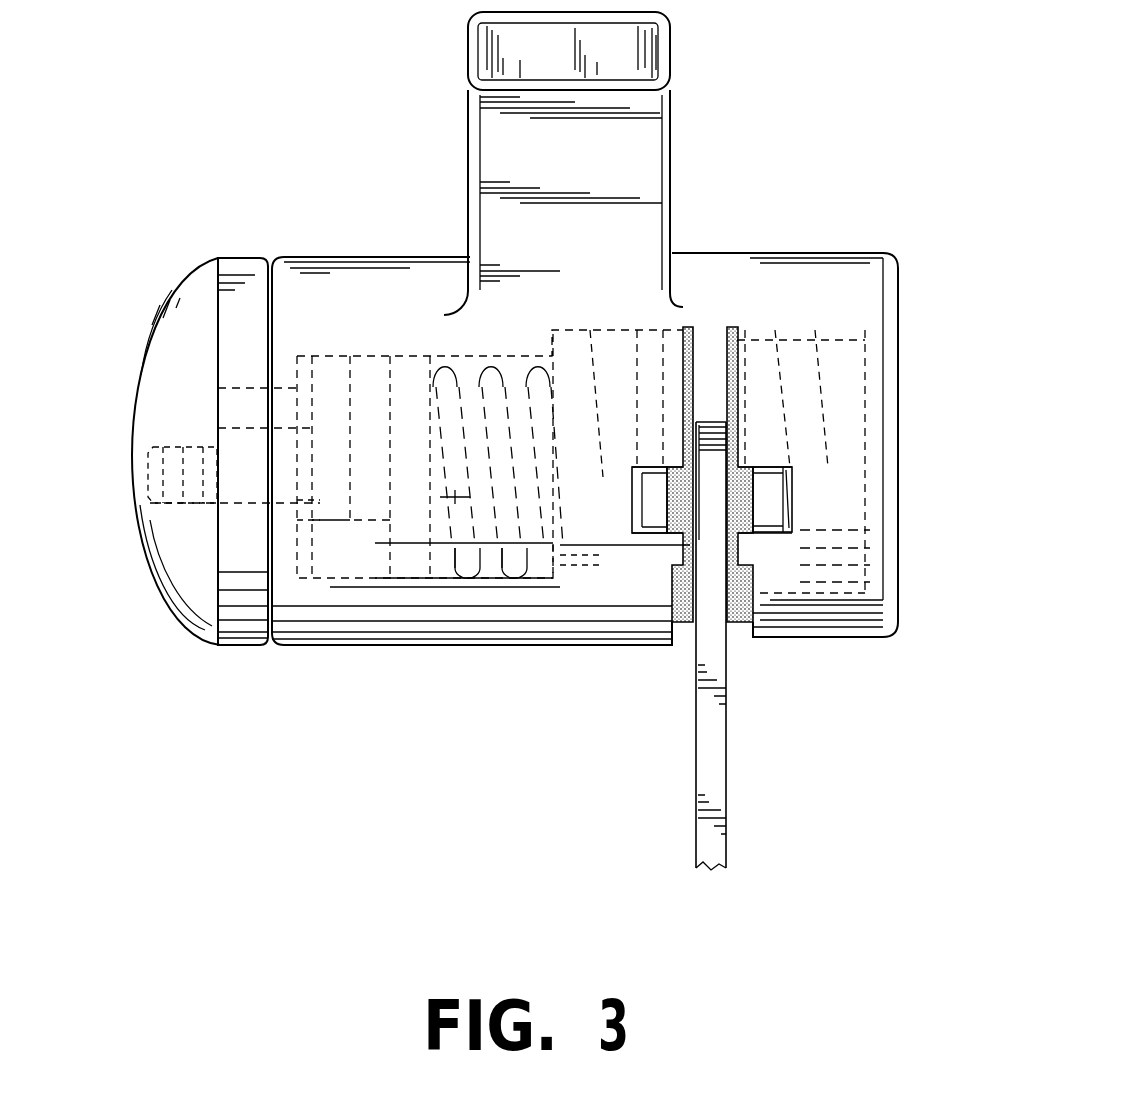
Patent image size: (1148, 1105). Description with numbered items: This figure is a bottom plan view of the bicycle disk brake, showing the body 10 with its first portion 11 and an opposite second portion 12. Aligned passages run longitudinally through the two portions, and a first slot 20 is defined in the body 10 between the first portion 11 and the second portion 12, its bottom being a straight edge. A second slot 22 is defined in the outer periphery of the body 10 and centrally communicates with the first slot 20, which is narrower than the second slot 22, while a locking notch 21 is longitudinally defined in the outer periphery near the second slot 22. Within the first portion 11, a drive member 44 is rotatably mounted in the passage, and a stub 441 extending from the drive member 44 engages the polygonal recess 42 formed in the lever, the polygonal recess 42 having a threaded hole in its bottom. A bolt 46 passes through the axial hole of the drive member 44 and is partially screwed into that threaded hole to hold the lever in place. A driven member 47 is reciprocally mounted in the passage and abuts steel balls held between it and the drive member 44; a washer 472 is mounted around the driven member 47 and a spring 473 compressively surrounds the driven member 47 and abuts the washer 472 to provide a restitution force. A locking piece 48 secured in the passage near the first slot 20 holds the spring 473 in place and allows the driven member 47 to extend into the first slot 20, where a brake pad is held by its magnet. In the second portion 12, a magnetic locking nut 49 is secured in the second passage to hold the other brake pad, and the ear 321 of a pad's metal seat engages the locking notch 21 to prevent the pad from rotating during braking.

The body 10 is at (642, 158).
The first portion 11 is at (363, 280).
The second portion 12 is at (837, 270).
The first slot 20 is at (710, 270).
The locking notch 21 is at (790, 475).
The second slot 22 is at (748, 622).
The ear 321 is at (652, 483).
The polygonal recess 42 is at (243, 548).
The drive member 44 is at (338, 557).
The bolt 46 is at (201, 448).
The driven member 47 is at (363, 367).
The locking piece 48 is at (600, 597).
The magnetic locking nut 49 is at (843, 587).
The stub 441 is at (288, 545).
The washer 472 is at (417, 560).
The spring 473 is at (468, 560).